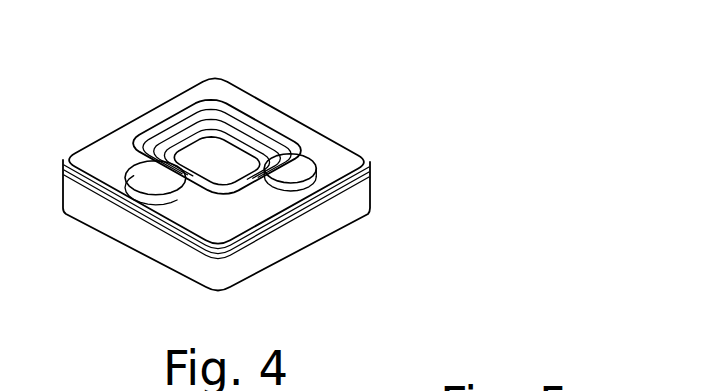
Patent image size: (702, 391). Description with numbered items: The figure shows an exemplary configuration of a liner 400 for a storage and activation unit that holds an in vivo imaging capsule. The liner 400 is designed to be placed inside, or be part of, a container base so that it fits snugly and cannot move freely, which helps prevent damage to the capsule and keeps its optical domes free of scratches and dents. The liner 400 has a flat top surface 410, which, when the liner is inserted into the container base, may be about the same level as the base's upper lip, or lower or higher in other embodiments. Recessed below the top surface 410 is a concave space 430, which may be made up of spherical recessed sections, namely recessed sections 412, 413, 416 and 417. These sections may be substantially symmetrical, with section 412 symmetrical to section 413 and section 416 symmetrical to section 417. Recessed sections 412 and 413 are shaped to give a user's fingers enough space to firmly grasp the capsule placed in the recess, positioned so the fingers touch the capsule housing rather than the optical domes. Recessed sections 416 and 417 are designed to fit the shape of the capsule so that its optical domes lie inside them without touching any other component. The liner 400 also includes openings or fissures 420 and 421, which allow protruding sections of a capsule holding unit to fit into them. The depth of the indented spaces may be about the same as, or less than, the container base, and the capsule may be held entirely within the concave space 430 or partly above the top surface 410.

The liner 400 is at (505, 135).
The top surface 410 is at (322, 153).
The recessed section 412 is at (263, 193).
The recessed section 413 is at (202, 157).
The recessed section 416 is at (273, 133).
The recessed section 417 is at (152, 122).
The fissure 420 is at (242, 182).
The fissure 421 is at (220, 195).
The concave space 430 is at (182, 138).